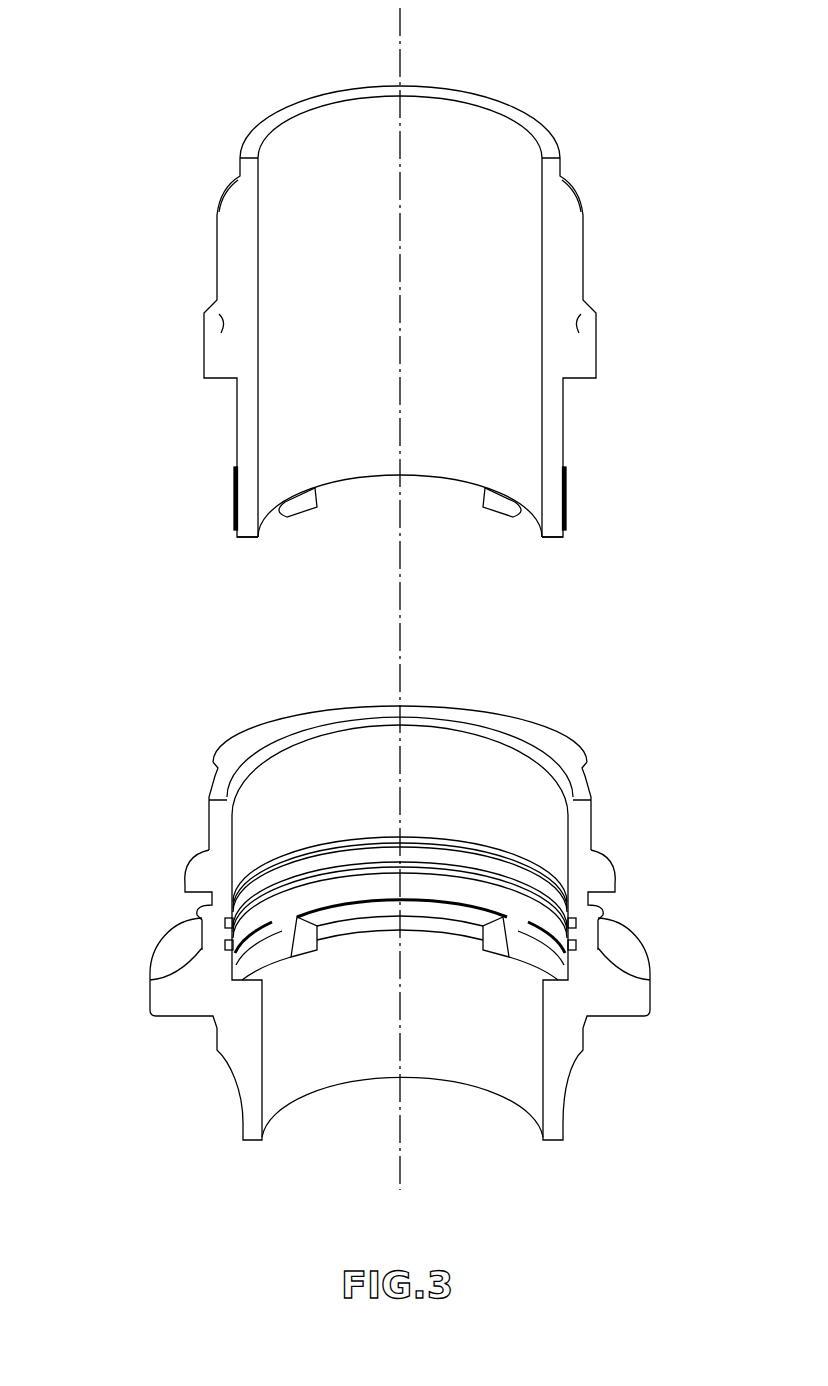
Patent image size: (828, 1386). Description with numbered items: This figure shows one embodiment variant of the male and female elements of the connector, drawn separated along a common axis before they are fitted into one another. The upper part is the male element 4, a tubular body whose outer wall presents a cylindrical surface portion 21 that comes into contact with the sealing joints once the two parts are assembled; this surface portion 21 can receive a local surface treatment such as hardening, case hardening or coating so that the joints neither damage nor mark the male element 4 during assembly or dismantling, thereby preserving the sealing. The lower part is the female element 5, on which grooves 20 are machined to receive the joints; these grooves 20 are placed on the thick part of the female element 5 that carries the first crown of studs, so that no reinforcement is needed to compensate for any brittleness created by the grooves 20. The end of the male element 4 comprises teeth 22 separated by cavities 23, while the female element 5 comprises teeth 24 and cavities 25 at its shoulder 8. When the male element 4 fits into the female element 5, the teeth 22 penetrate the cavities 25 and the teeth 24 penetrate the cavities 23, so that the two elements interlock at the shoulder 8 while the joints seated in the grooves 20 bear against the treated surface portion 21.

The male element 4 is at (582, 232).
The cylindrical surface portion 21 is at (568, 492).
The teeth 22 is at (298, 518).
The cavities 23 is at (395, 477).
The female element 5 is at (190, 958).
The shoulder 8 is at (355, 896).
The teeth 24 is at (428, 901).
The cavities 25 is at (294, 938).
The grooves 20 is at (577, 943).